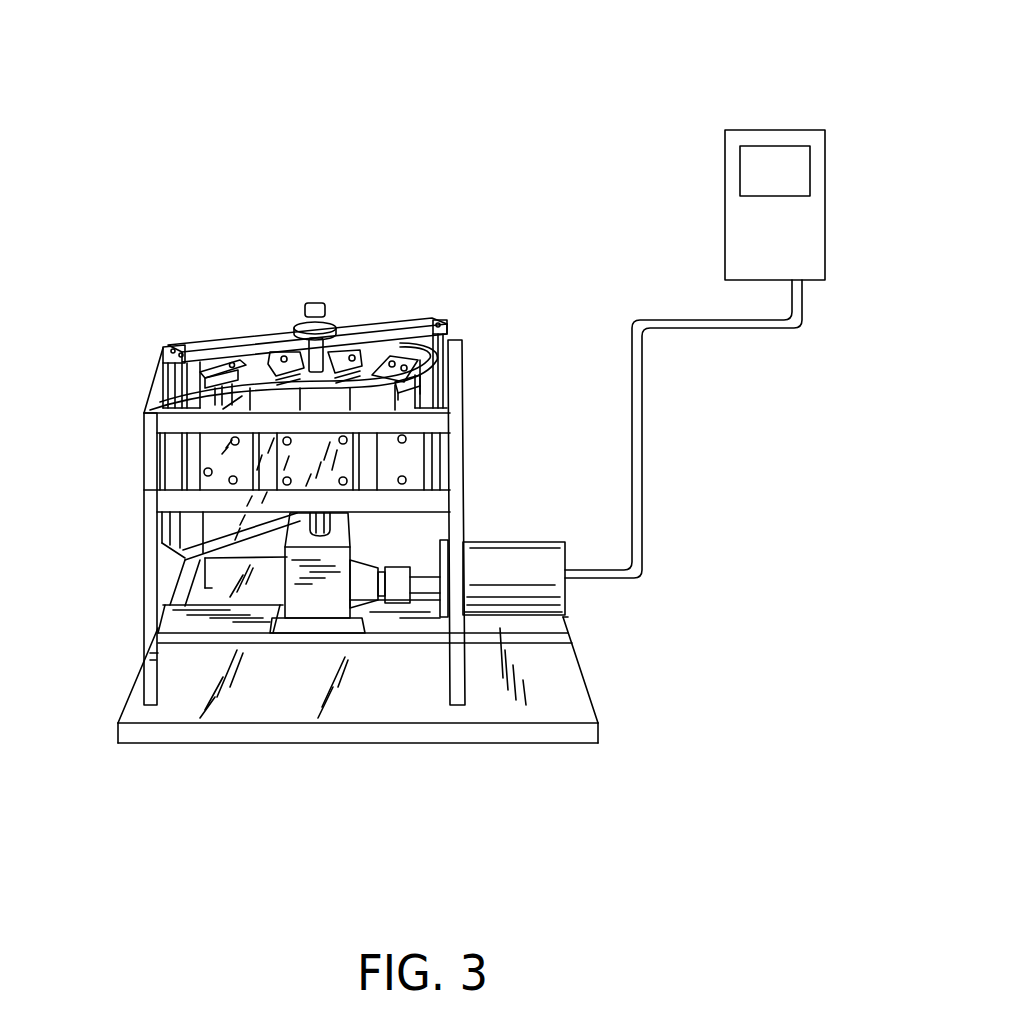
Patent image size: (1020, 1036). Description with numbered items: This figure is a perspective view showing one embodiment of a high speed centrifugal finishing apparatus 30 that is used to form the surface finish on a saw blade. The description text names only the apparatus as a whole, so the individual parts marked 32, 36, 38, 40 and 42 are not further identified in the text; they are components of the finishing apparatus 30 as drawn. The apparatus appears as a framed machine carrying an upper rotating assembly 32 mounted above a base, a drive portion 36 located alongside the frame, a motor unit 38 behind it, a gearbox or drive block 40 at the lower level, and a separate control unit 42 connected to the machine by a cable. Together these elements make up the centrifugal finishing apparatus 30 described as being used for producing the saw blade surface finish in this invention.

The test apparatus 30 is at (212, 290).
The turntable assembly 32 is at (147, 412).
The drive coupling 36 is at (486, 504).
The motor 38 is at (535, 542).
The gearbox 40 is at (318, 608).
The controller 42 is at (779, 126).